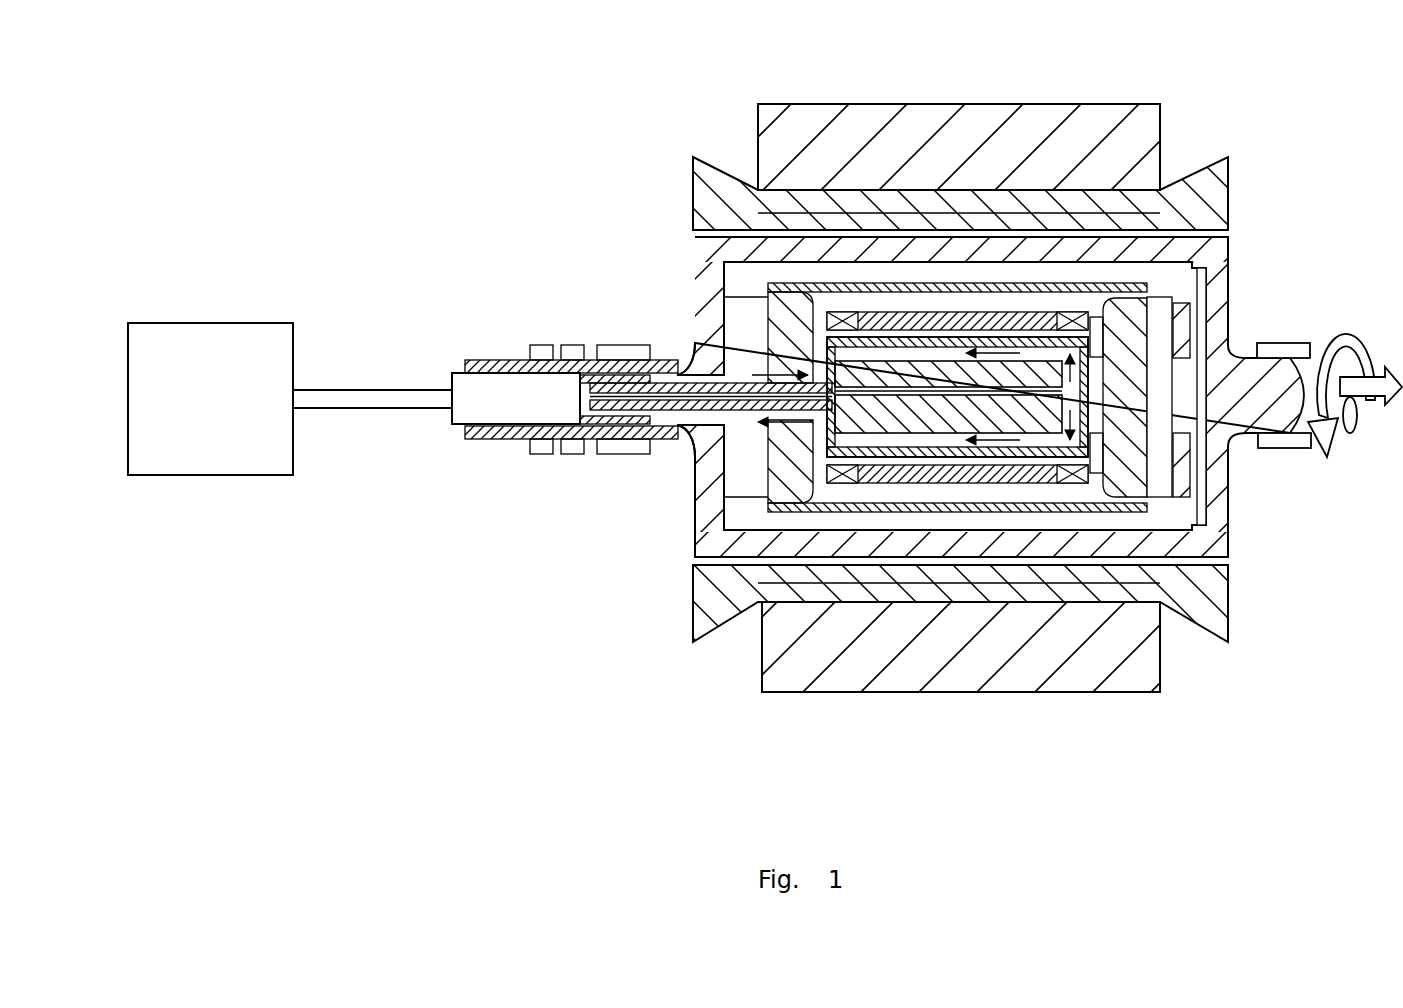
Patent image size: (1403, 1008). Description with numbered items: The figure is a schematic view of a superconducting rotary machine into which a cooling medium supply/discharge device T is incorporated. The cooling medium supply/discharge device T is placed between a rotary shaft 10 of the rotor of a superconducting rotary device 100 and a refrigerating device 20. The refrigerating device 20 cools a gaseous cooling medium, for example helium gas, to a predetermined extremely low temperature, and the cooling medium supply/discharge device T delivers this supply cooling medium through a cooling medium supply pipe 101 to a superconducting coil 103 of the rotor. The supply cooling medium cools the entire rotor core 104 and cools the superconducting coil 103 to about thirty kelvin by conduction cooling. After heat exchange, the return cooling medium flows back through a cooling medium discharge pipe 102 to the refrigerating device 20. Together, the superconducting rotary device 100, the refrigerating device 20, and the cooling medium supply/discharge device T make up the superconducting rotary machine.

The refrigerating device 20 is at (184, 480).
The cooling medium supply/discharge device T is at (490, 474).
The rotary shaft 10 is at (655, 445).
The superconducting rotary device 100 is at (777, 752).
The cooling medium supply pipe 101 is at (680, 366).
The cooling medium discharge pipe 102 is at (682, 438).
The superconducting coil 103 is at (1073, 320).
The rotor core 104 is at (910, 415).